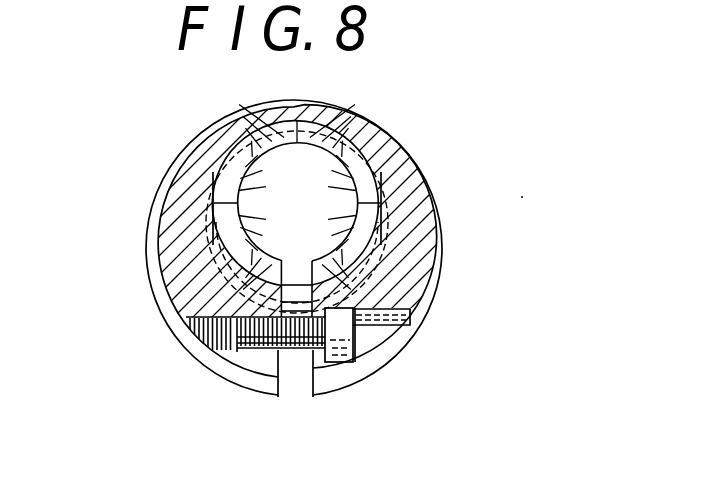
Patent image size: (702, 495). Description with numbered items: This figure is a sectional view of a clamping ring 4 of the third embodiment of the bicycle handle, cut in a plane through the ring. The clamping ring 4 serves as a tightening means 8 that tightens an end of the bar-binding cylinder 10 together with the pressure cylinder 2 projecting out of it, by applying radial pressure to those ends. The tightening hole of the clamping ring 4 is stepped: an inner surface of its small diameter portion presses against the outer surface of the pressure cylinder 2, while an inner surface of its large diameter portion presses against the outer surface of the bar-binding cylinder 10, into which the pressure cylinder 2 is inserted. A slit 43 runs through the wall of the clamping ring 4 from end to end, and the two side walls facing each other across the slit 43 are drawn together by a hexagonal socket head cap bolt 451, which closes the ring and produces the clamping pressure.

The pressure cylinder 2 is at (217, 173).
The clamping ring 4 is at (402, 360).
The tightening means 8 is at (142, 332).
The bar-binding cylinder 10 is at (404, 184).
The slit 43 is at (295, 362).
The bolt 451 is at (258, 350).